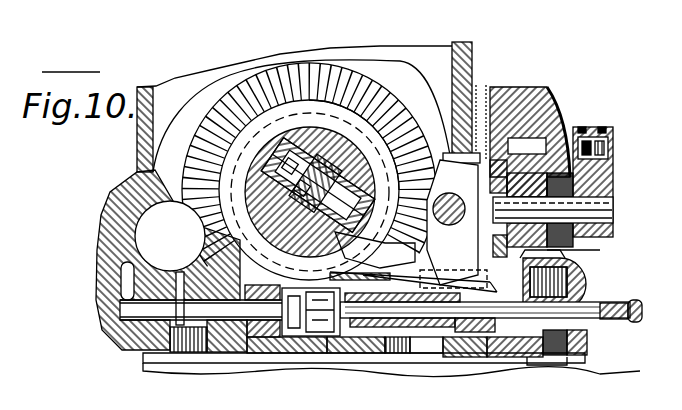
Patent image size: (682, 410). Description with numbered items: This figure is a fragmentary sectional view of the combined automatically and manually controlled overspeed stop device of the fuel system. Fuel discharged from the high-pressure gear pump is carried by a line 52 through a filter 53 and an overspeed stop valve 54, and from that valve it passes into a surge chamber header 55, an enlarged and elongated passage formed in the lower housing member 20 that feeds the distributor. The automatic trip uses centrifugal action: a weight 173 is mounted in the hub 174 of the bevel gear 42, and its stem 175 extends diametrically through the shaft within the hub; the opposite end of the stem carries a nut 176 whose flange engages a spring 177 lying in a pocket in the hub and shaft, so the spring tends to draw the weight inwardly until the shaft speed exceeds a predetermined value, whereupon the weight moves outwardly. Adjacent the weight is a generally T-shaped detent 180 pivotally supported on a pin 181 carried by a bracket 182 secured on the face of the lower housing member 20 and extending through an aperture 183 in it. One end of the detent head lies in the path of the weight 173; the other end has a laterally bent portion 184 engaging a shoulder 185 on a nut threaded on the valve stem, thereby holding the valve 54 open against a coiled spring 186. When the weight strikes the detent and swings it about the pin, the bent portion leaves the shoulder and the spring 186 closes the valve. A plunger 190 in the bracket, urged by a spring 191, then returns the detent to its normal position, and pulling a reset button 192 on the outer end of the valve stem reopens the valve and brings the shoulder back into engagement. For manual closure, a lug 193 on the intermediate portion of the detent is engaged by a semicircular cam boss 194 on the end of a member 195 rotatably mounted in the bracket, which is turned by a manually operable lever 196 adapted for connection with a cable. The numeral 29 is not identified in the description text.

The lower housing member 20 is at (125, 207).
The gear rim 29 is at (383, 110).
The bevel gear 42 is at (352, 80).
The line 52 is at (428, 338).
The filter 53 is at (443, 340).
The overspeed stop valve 54 is at (297, 327).
The surge chamber header 55 is at (142, 245).
The weight 173 is at (345, 250).
The hub 174 is at (417, 112).
The stem 175 is at (300, 188).
The nut 176 is at (320, 150).
The spring 177 is at (290, 170).
The detent 180 is at (398, 263).
The pin 181 is at (452, 198).
The bracket 182 is at (545, 108).
The aperture 183 is at (463, 160).
The laterally bent portion 184 is at (580, 265).
The shoulder 185 is at (510, 330).
The coiled spring 186 is at (340, 337).
The plunger 190 is at (578, 268).
The spring 191 is at (583, 283).
The reset button 192 is at (615, 322).
The lug 193 is at (545, 172).
The semicircular cam boss 194 is at (415, 250).
The member 195 is at (614, 206).
The manually operable lever 196 is at (612, 177).